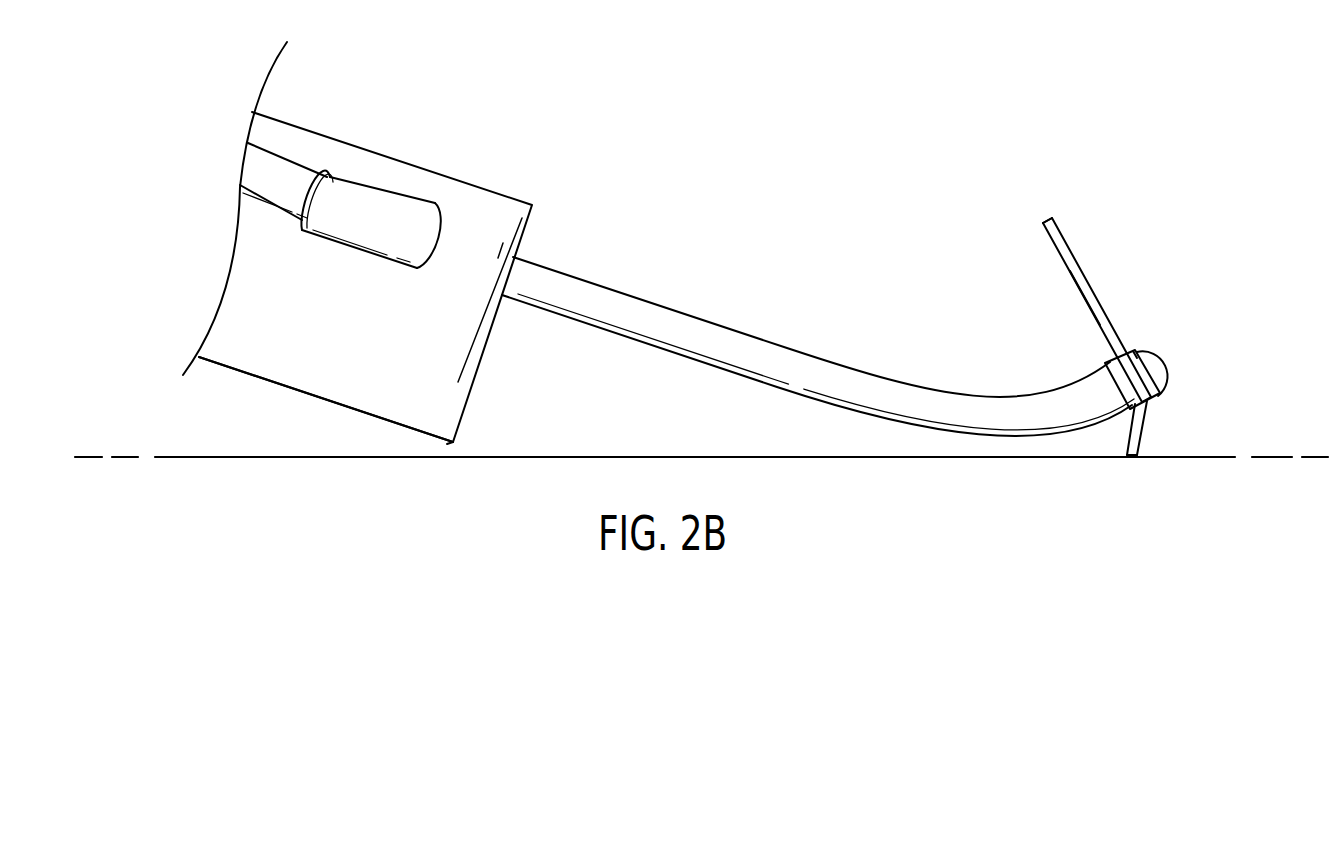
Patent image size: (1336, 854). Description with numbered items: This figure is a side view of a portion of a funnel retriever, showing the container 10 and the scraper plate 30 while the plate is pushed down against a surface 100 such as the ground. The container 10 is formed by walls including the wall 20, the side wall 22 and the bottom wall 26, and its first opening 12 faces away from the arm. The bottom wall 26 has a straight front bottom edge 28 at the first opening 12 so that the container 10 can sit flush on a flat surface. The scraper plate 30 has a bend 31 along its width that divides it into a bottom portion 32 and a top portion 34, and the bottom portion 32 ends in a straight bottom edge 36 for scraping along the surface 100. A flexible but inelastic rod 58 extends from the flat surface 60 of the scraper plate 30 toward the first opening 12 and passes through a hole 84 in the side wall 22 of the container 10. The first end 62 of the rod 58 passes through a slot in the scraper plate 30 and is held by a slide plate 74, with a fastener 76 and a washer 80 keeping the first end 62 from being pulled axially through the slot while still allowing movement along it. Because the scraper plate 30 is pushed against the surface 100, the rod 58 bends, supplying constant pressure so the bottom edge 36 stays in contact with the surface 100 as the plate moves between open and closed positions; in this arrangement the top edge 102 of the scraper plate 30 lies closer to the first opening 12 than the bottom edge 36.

The container 10 is at (707, 275).
The first opening 12 is at (480, 384).
The wall 20 is at (359, 275).
The side wall 22 is at (247, 302).
The bottom wall 26 is at (326, 403).
The front bottom edge 28 is at (453, 444).
The scraper plate 30 is at (1110, 339).
The bend 31 is at (1152, 407).
The bottom portion 32 is at (1142, 430).
The top portion 34 is at (1092, 290).
The bottom edge 36 is at (1127, 458).
The rod 58 is at (818, 378).
The flat surface 60 is at (1056, 266).
The first end 62 is at (997, 420).
The slide plate 74 is at (1135, 352).
The fastener 76 is at (1167, 368).
The washer 80 is at (1135, 353).
The hole 84 is at (427, 268).
The surface 100 is at (693, 453).
The top edge 102 is at (1045, 220).